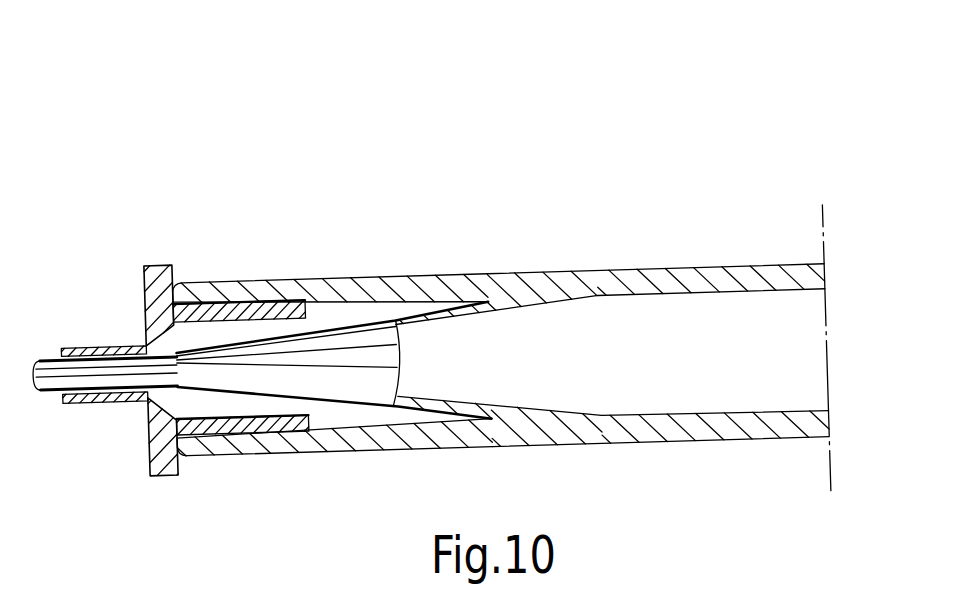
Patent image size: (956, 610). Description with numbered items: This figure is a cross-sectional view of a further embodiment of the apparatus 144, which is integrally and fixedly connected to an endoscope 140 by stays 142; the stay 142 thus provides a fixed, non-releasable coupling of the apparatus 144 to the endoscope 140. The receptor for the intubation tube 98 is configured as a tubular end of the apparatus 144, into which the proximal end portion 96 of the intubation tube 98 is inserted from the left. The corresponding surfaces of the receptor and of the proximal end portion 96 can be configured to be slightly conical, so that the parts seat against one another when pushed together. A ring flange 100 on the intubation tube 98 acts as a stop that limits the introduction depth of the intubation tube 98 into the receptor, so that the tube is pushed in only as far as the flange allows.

The proximal end portion 96 is at (255, 437).
The intubation tube 98 is at (107, 398).
The ring flange 100 is at (147, 292).
The endoscope 140 is at (663, 284).
The stay 142 is at (448, 283).
The apparatus 144 is at (233, 292).